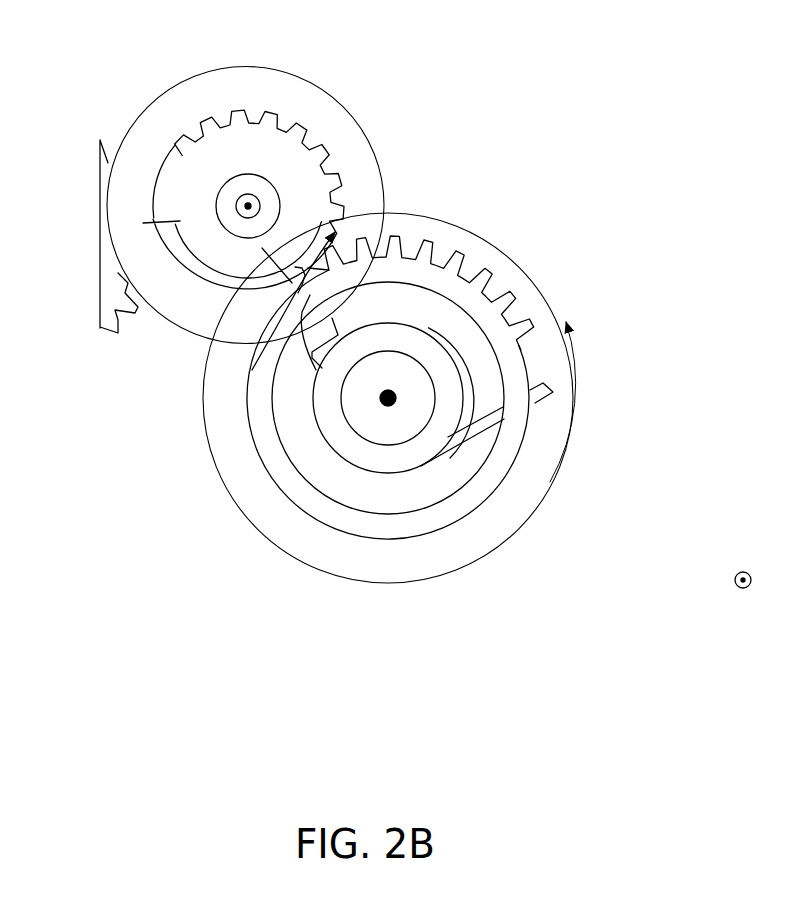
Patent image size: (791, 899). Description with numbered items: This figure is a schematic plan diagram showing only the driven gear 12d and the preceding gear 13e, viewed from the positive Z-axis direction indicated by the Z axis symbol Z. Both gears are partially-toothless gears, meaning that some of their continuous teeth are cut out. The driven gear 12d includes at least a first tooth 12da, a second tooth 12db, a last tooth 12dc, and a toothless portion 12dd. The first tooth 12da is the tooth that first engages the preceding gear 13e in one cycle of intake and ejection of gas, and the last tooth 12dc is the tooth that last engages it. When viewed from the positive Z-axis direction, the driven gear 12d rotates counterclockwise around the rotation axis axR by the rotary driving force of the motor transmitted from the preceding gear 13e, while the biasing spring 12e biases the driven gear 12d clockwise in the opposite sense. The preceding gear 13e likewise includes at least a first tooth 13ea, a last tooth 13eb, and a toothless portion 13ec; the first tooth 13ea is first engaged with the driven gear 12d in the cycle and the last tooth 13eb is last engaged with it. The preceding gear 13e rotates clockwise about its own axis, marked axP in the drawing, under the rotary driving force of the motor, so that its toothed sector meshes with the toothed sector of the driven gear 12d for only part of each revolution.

The preceding gear 13e is at (188, 117).
The first tooth 13ea is at (321, 190).
The last tooth 13eb is at (175, 178).
The toothless portion 13ec is at (168, 223).
The driven gear 12d is at (512, 244).
The first tooth 12da is at (264, 258).
The second tooth 12db is at (373, 245).
The last tooth 12dc is at (530, 328).
The toothless portion 12dd is at (371, 586).
The biasing spring 12e is at (552, 396).
The pinion axis axP is at (248, 206).
The rotation axis axR is at (388, 400).
The Z-axis Z is at (752, 582).